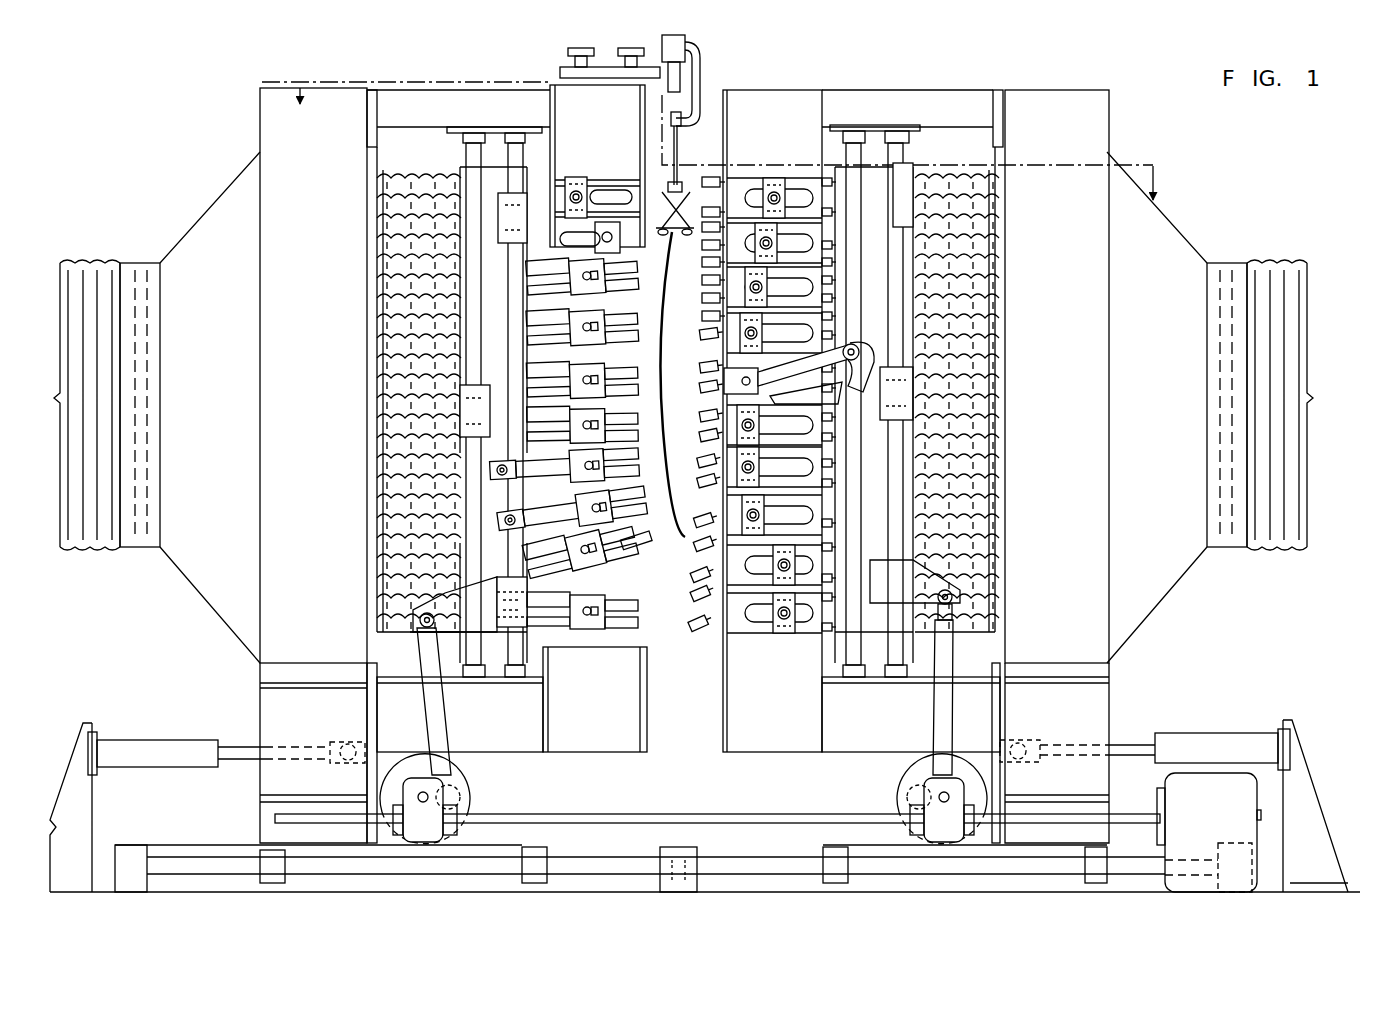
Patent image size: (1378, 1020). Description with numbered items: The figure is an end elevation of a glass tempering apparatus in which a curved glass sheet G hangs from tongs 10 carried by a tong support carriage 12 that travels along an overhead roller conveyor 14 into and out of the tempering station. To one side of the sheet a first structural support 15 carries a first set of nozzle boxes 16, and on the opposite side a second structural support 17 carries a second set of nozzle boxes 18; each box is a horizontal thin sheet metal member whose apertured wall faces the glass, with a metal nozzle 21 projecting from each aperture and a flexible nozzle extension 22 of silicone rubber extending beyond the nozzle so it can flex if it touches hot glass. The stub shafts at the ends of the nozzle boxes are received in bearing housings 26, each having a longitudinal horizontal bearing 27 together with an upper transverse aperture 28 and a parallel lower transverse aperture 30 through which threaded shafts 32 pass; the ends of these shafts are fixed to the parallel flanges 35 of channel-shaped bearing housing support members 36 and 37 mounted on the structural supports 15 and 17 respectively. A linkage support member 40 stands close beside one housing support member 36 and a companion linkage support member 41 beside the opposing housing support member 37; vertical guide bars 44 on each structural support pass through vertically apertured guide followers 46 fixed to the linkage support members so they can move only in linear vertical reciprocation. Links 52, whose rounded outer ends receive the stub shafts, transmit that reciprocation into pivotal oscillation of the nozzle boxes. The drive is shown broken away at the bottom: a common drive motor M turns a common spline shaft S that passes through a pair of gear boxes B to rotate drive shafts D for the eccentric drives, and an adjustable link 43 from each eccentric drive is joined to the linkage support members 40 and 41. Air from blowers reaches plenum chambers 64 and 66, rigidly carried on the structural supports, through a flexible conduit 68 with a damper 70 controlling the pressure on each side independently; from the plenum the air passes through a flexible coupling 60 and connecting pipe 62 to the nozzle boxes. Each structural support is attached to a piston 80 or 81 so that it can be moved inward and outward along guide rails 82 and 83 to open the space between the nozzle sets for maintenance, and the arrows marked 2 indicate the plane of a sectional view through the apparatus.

The first structural support 15 is at (437, 70).
The second structural support 17 is at (898, 76).
The bearing housing support member 36 is at (550, 82).
The bearing housing support member 37 is at (750, 86).
The tong support carriage 12 is at (700, 75).
The overhead roller conveyor 14 is at (664, 98).
The tongs 10 is at (680, 185).
The upper transverse aperture 28 is at (576, 185).
The longitudinal horizontal bearing 27 is at (588, 195).
The threaded shafts 32 is at (735, 200).
The bearing housing 26 is at (782, 192).
The linkage support member 41 is at (915, 172).
The parallel flanges 35 is at (822, 110).
The section line 2- 2 is at (709, 169).
The flexible conduit 68 is at (95, 262).
The damper 70 is at (140, 262).
The guide followers 46 is at (533, 213).
The vertical guide bars 44 is at (482, 370).
The curved glass sheet G is at (660, 330).
The first set of nozzle boxes 16 is at (598, 368).
The second set of nozzle boxes 18 is at (724, 378).
The link 52 is at (806, 391).
The plenum chamber 64 is at (268, 465).
The plenum chamber 66 is at (1099, 466).
The nozzle extension 22 is at (640, 563).
The metal nozzle 21 is at (640, 592).
The connecting pipe 62 is at (368, 648).
The flexible coupling 60 is at (377, 636).
The linkage support member 40 is at (504, 619).
The adjustable link 43 is at (455, 716).
The lower transverse aperture 30 is at (785, 640).
The piston 80 is at (243, 742).
The piston 81 is at (1135, 742).
The common drive motor M is at (1200, 775).
The drive shafts D is at (446, 780).
The gear boxes B is at (458, 800).
The common spline shaft S is at (790, 813).
The guide rail 82 is at (237, 856).
The guide rail 83 is at (785, 860).